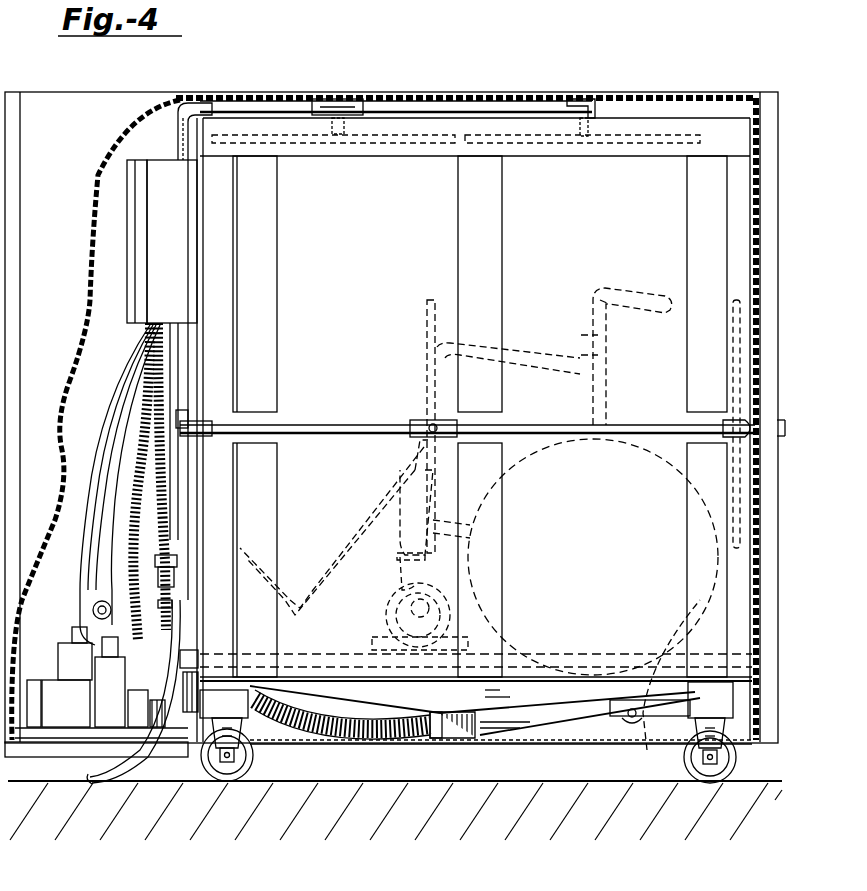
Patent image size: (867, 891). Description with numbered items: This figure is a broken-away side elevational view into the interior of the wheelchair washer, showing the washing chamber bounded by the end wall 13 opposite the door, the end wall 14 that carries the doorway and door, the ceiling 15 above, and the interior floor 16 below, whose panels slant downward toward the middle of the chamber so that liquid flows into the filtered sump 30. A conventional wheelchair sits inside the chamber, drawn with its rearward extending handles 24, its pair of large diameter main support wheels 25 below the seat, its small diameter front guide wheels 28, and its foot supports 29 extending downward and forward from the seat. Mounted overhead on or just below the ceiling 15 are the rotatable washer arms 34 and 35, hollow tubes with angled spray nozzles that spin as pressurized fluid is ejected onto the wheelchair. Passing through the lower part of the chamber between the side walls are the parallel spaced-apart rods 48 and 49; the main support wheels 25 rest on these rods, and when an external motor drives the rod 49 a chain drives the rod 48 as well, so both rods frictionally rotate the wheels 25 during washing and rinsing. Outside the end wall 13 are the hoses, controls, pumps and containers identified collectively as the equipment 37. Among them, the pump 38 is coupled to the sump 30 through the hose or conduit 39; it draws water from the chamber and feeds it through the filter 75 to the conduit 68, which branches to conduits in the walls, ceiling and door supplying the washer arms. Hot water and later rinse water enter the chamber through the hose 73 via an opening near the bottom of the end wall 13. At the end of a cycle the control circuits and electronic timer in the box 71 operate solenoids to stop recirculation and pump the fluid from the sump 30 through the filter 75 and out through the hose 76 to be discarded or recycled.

The end wall 13 is at (195, 205).
The end wall 14 is at (760, 178).
The ceiling 15 is at (515, 92).
The interior floor 16 is at (556, 714).
The handles 24 is at (632, 292).
The main support wheels 25 is at (672, 420).
The guide wheels 28 is at (385, 590).
The foot supports 29 is at (350, 538).
The sump 30 is at (468, 736).
The washer arm 34 is at (302, 147).
The washer arm 35 is at (535, 147).
The hoses, controls, pumps and containers 37 is at (120, 258).
The pump 38 is at (42, 685).
The hose or conduit 39 is at (283, 740).
The rod 48 is at (543, 673).
The rod 49 is at (668, 689).
The conduit 68 is at (180, 505).
The box 71 is at (122, 185).
The hose 73 is at (80, 768).
The filter 75 is at (113, 560).
The hose 76 is at (75, 590).